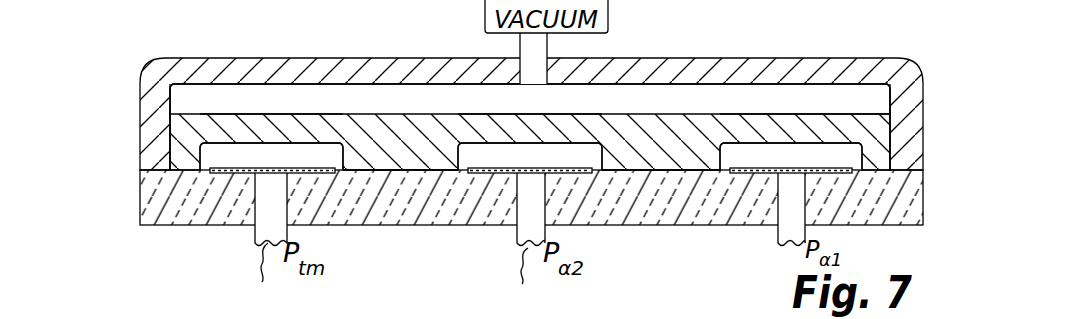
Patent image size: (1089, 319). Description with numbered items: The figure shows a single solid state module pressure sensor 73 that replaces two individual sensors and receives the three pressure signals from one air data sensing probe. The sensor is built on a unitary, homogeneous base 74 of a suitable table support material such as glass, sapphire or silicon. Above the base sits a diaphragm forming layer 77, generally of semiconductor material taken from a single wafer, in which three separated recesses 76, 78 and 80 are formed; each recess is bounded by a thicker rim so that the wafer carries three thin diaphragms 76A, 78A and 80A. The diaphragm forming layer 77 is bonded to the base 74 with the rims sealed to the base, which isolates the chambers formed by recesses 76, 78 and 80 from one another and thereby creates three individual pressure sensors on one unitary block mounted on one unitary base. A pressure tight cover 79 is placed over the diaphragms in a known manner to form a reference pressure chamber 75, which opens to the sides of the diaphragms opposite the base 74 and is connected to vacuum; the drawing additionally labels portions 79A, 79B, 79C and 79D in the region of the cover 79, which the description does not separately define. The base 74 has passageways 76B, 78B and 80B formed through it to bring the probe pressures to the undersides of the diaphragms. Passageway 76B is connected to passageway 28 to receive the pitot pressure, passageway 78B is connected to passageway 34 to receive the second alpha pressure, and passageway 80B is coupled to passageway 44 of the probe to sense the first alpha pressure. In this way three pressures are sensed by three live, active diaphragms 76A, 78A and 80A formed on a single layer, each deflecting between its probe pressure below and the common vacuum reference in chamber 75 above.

The single solid state module pressure sensor 73 is at (136, 63).
The base 74 is at (890, 217).
The reference pressure chamber 75 is at (725, 102).
The recess 76 is at (217, 165).
The diaphragm 76A is at (255, 123).
The passageway 76B is at (270, 215).
The diaphragm forming layer 77 is at (665, 118).
The recess 78 is at (503, 157).
The diaphragm 78A is at (553, 133).
The passageway 78B is at (527, 215).
The pressure tight cover 79 is at (136, 100).
The housing body right wall portion 79A is at (883, 157).
The housing body middle-right portion 79B is at (650, 187).
The housing body middle-left portion 79C is at (408, 160).
The first pedestal 79D is at (217, 152).
The recess 80 is at (735, 158).
The diaphragm 80A is at (805, 117).
The passageway 80B is at (797, 203).
The passageway 44 is at (788, 248).
The passageway 28 is at (257, 278).
The passageway 34 is at (527, 280).